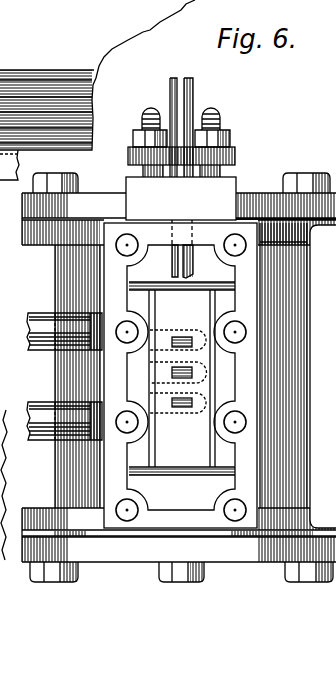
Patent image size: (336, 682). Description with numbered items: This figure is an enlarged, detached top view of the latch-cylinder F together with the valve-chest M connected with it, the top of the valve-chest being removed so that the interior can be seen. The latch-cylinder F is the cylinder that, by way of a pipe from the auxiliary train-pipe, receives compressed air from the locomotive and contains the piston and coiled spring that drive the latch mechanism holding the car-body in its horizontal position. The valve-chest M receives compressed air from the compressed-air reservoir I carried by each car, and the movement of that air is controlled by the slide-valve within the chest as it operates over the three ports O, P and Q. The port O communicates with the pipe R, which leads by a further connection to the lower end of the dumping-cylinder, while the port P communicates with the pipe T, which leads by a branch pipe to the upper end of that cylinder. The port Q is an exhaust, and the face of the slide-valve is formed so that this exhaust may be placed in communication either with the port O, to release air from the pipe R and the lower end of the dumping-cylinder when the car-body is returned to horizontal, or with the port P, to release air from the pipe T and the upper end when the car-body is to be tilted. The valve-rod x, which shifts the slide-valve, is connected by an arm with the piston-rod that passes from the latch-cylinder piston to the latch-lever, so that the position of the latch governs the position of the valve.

The valve-rod x is at (183, 78).
The latch-cylinder F is at (191, 197).
The pipe T is at (29, 313).
The pipe R is at (42, 402).
The port O is at (185, 336).
The exhaust-port Q is at (192, 372).
The port P is at (177, 406).
The valve-chest M is at (182, 378).
The compressed-air reservoir I is at (97, 90).